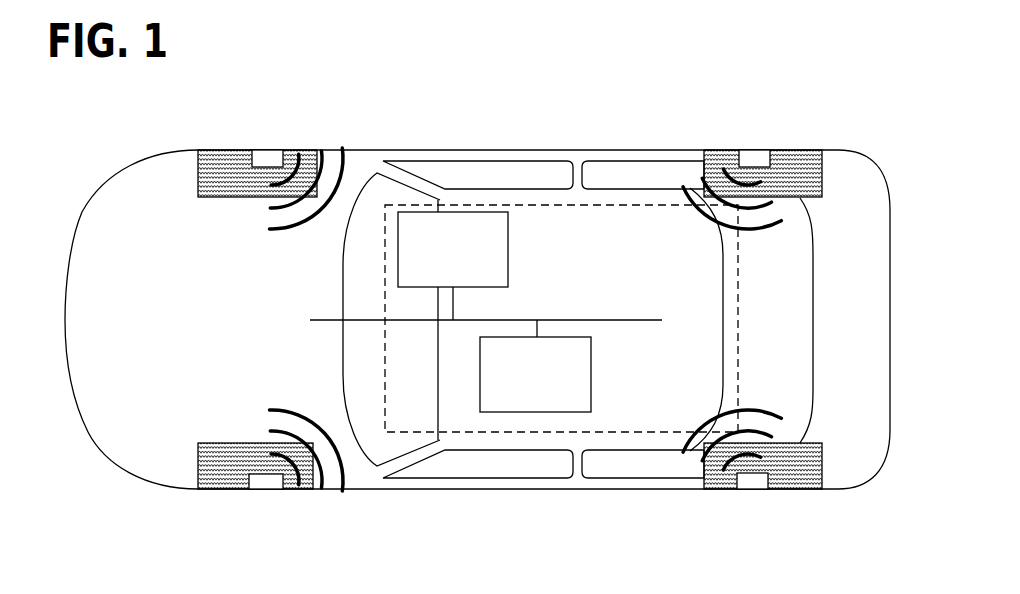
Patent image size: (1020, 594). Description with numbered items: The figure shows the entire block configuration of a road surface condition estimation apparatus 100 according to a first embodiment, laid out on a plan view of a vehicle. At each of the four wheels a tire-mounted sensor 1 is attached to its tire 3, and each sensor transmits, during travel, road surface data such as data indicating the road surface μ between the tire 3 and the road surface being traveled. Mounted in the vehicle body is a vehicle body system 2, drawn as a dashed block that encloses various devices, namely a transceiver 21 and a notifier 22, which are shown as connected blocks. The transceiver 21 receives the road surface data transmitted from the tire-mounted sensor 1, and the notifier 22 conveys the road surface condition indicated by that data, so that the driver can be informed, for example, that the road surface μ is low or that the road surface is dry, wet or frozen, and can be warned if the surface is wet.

The road surface condition estimation apparatus 100 is at (397, 127).
The tire-mounted sensor 1 is at (263, 160).
The vehicle body system 2 is at (675, 204).
The tire 3 is at (198, 177).
The transceiver 21 is at (545, 412).
The notifier 22 is at (465, 212).